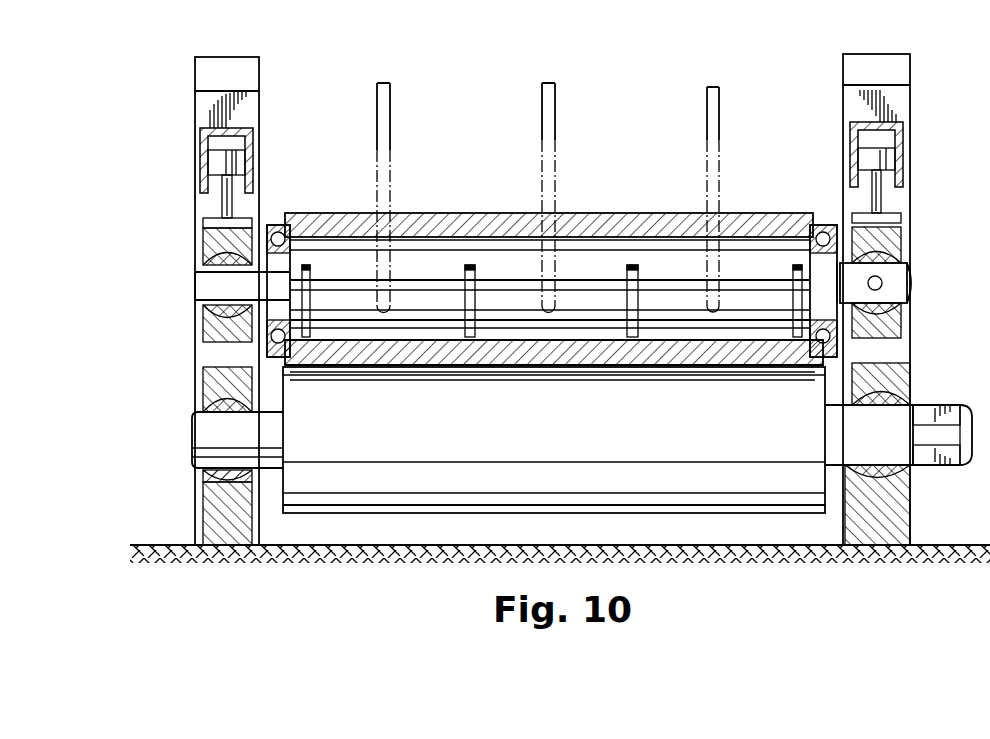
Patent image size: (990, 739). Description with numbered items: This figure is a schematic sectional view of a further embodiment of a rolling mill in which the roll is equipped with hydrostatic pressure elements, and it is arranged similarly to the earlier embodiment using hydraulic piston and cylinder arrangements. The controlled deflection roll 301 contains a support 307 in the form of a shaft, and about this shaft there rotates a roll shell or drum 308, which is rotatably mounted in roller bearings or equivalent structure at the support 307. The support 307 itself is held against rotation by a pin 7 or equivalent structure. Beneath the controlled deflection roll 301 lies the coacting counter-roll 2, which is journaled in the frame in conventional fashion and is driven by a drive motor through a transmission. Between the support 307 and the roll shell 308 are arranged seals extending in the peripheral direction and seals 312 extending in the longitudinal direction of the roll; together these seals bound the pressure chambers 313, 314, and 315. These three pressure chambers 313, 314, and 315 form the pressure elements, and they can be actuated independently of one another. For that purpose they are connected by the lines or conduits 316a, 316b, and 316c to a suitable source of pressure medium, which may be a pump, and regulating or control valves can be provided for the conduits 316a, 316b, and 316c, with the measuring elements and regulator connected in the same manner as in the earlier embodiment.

The counter-roll 2 is at (385, 500).
The pin 7 is at (883, 283).
The controlled deflection roll 301 is at (497, 195).
The support 307 is at (405, 245).
The roll shell 308 is at (620, 238).
The seals 312 is at (340, 282).
The pressure chamber 313 is at (332, 340).
The pressure chamber 314 is at (553, 340).
The pressure chamber 315 is at (725, 340).
The conduit 316a is at (380, 83).
The conduit 316b is at (545, 83).
The conduit 316c is at (716, 87).